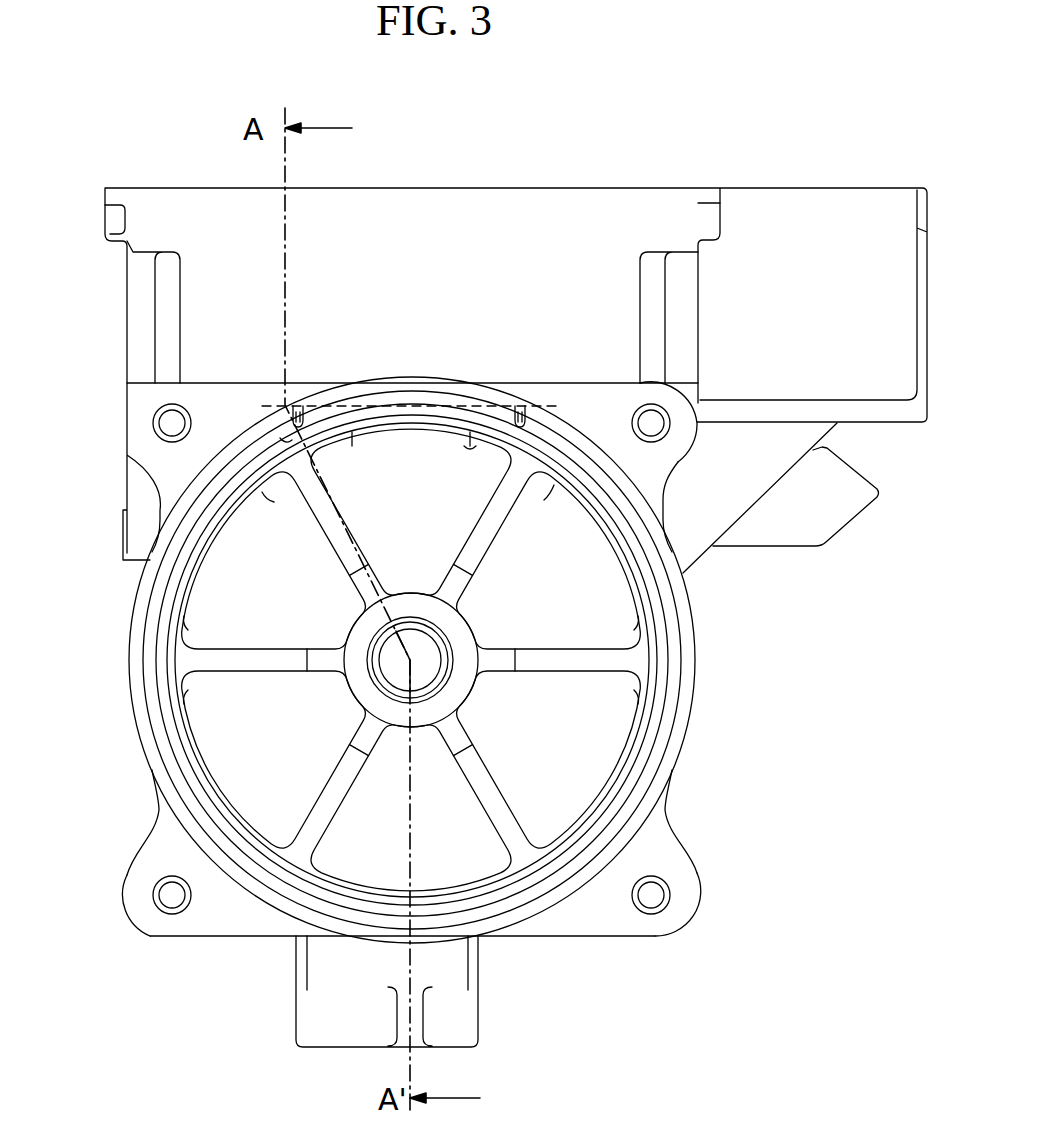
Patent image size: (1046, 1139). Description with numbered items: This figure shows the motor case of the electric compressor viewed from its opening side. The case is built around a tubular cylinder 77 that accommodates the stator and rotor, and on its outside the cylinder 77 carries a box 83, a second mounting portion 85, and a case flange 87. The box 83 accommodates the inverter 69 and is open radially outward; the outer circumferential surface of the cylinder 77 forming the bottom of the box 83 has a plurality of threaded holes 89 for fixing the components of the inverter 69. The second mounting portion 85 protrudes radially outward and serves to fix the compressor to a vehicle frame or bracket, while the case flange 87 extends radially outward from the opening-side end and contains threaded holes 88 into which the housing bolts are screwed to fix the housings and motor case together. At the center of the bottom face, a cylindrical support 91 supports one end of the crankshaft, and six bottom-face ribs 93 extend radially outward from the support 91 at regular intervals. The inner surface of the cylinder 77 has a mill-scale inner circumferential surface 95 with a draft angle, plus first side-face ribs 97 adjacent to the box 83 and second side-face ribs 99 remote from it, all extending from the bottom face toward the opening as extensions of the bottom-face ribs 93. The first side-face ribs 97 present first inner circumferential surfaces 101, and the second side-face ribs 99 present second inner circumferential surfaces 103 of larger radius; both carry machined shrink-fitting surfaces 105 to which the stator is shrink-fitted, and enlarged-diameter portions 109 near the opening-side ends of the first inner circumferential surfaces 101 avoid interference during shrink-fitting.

The inverter 69 is at (538, 180).
The tubular cylinder 77 is at (693, 605).
The box 83 is at (420, 200).
The second mounting portion 85 is at (475, 1008).
The case flange 87 is at (148, 405).
The threaded holes 88 is at (165, 423).
The threaded holes 89 is at (302, 402).
The cylindrical support 91 is at (420, 728).
The bottom-face ribs 93 is at (306, 652).
The inner circumferential surface 95 is at (378, 893).
The first side-face ribs 97 is at (258, 445).
The second side-face ribs 99 is at (150, 668).
The first inner circumferential surfaces 101 is at (342, 450).
The second inner circumferential surfaces 103 is at (192, 693).
The shrink-fitting surfaces 105 is at (262, 497).
The enlarged-diameter portions 109 is at (286, 442).